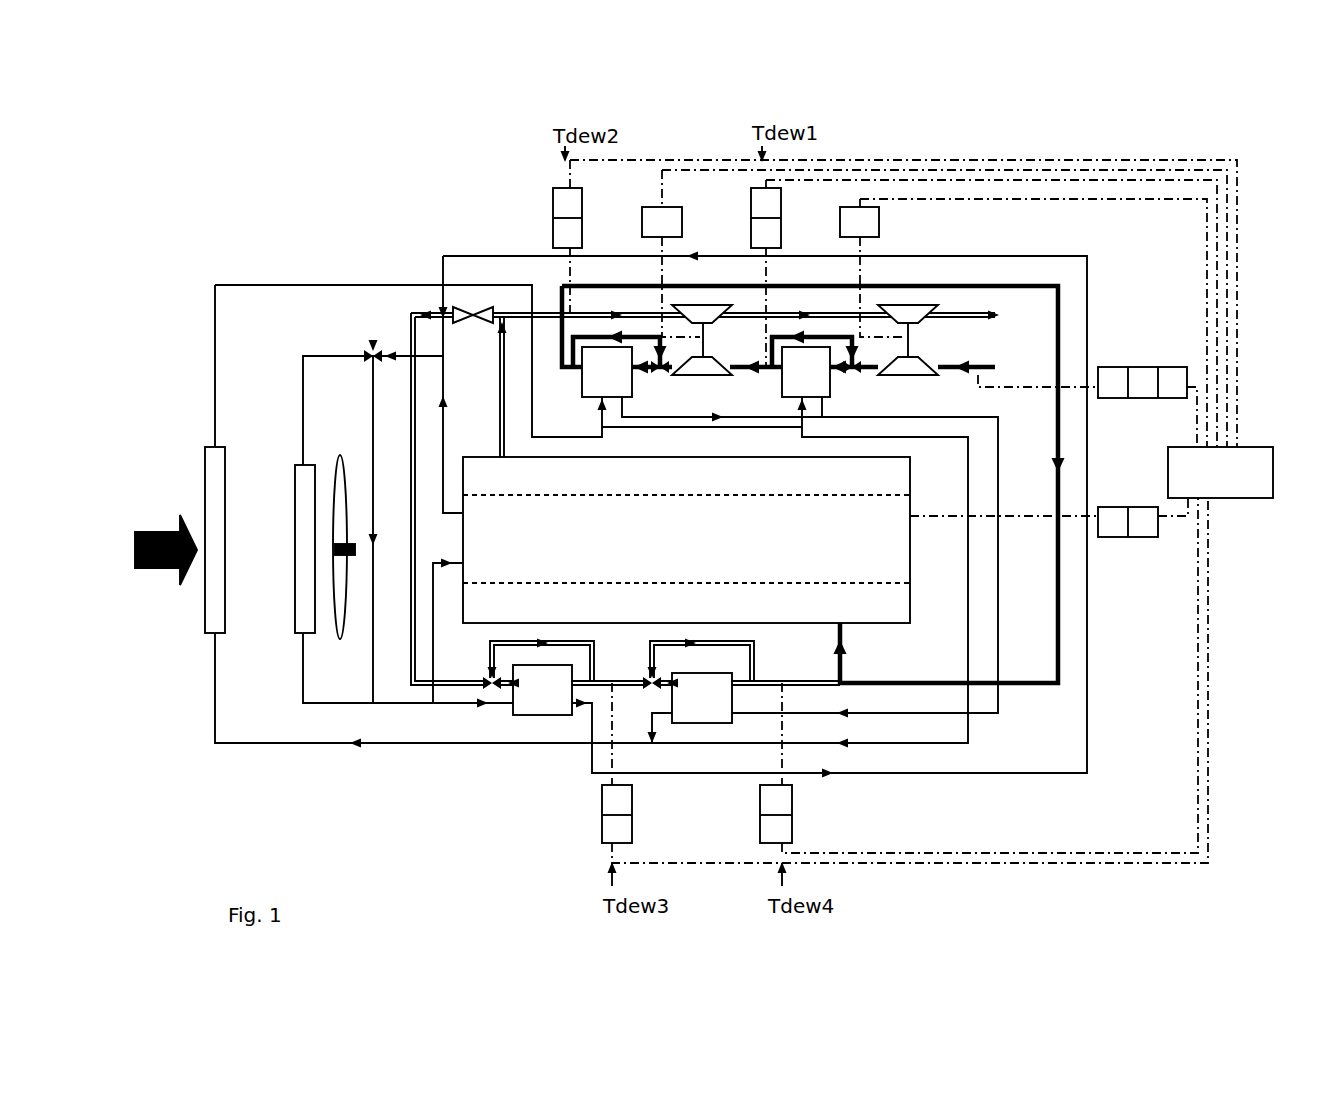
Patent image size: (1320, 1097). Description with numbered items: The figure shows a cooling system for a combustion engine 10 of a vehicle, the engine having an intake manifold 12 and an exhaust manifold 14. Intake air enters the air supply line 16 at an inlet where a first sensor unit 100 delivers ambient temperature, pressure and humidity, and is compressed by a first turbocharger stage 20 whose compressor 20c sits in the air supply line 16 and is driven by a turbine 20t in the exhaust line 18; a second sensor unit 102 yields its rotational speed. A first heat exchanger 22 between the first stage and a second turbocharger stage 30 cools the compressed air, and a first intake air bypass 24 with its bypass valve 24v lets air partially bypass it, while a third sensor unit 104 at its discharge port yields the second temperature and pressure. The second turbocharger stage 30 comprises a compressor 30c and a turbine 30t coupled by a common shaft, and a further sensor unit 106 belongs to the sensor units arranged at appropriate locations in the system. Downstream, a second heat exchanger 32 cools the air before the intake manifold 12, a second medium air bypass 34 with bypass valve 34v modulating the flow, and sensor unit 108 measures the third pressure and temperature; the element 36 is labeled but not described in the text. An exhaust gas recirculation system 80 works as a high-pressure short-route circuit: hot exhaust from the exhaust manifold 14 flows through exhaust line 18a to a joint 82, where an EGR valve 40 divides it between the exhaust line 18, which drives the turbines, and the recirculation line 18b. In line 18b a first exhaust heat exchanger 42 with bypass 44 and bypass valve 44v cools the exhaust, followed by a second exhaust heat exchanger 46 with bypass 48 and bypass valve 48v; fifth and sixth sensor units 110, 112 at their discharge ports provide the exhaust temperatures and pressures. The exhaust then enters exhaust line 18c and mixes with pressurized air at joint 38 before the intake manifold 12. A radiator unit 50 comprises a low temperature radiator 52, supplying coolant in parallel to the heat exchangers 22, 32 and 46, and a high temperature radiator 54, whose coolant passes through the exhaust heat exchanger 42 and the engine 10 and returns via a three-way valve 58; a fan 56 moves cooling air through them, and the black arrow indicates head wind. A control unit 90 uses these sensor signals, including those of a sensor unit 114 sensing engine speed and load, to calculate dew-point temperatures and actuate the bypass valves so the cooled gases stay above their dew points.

The combustion engine 10 is at (686, 540).
The intake manifold 12 is at (903, 594).
The exhaust manifold 14 is at (903, 468).
The air supply line 16 is at (990, 366).
The exhaust line 18 is at (986, 318).
The exhaust line 18a is at (501, 430).
The recirculation line 18b is at (412, 448).
The exhaust line 18c is at (802, 683).
The first turbocharger stage 20 is at (920, 354).
The compressor 20c is at (908, 376).
The turbine 20t is at (916, 324).
The first heat exchanger 22 is at (806, 372).
The first intake air bypass 24 is at (778, 337).
The bypass valve 24v is at (853, 374).
The second turbocharger stage 30 is at (727, 354).
The compressor 30c is at (706, 376).
The turbine 30t is at (708, 326).
The second heat exchanger 32 is at (607, 372).
The second medium air bypass 34 is at (578, 337).
The bypass valve 34v is at (660, 374).
The charge air line 36 is at (574, 372).
The joint 38 is at (845, 685).
The EGR valve 40 is at (478, 308).
The first exhaust heat exchanger 42 is at (542, 690).
The first exhaust bypass 44 is at (489, 650).
The bypass valve 44v is at (488, 682).
The second exhaust heat exchanger 46 is at (702, 698).
The second exhaust bypass 48 is at (652, 652).
The bypass valve 48v is at (648, 682).
The radiator unit 50 is at (192, 446).
The low temperature radiator 52 is at (226, 457).
The high temperature radiator 54 is at (297, 596).
The fan 56 is at (340, 622).
The 3-way valve 58 is at (372, 348).
The exhaust gas recirculation system 80 is at (428, 291).
The joint 82 is at (508, 320).
The control unit 90 is at (1168, 460).
The first sensor unit 100 is at (1120, 367).
The second sensor unit 102 is at (880, 220).
The third sensor unit 104 is at (781, 229).
The sensor unit 106 is at (682, 226).
The sensor unit 108 is at (582, 229).
The fifth sensor unit 110 is at (600, 826).
The sixth sensor unit 112 is at (760, 826).
The sensor unit 114 is at (1114, 538).